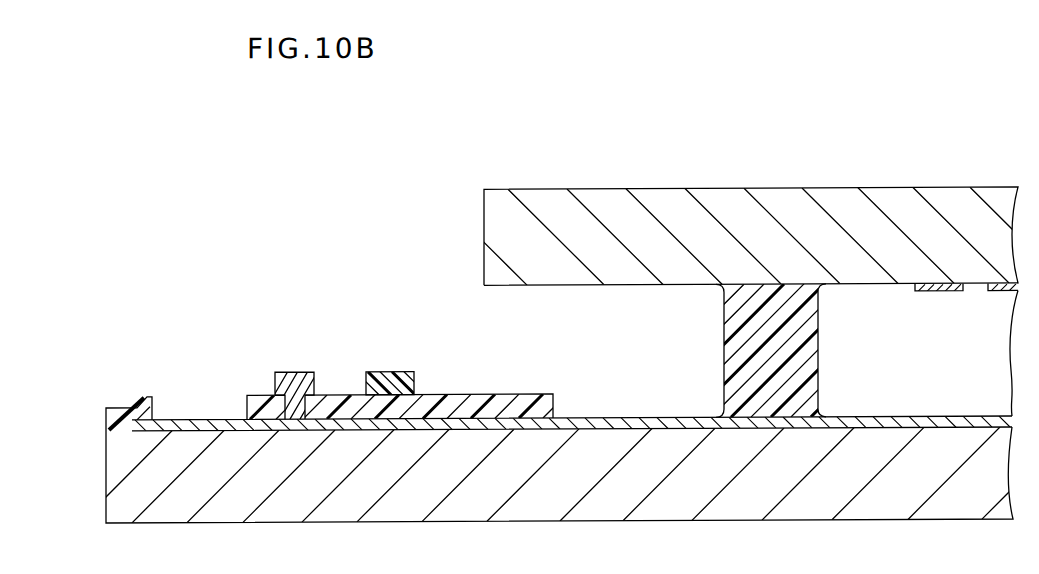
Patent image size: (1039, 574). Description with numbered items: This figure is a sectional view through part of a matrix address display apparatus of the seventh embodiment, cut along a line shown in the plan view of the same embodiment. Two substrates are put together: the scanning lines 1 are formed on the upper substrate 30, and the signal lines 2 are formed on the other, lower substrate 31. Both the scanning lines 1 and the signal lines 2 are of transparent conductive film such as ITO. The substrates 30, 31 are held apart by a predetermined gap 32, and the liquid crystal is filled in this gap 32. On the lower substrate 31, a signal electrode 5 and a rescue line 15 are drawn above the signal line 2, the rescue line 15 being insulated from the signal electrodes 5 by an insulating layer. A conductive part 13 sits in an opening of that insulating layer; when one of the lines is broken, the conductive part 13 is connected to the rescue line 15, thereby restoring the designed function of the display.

The scanning line 1 is at (935, 291).
The signal line 2 is at (926, 415).
The signal electrode 5 is at (176, 413).
The conductive part 13 is at (296, 369).
The rescue line 15 is at (385, 369).
The substrate 30 is at (620, 200).
The substrate 31 is at (783, 511).
The gap 32 is at (732, 303).